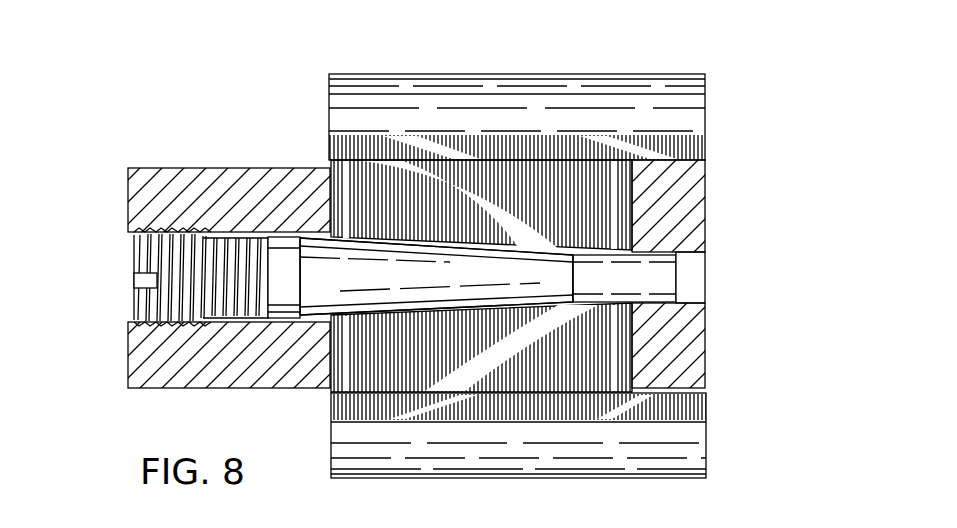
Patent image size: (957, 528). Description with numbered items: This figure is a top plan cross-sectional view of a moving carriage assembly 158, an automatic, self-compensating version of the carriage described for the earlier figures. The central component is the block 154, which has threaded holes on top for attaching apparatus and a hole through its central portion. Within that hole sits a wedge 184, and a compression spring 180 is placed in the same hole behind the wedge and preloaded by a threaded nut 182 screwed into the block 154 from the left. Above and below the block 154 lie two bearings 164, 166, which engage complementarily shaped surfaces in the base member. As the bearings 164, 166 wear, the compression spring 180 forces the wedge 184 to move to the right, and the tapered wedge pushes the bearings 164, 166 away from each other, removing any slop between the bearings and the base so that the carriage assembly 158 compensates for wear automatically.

The block 154 is at (688, 343).
The moving carriage assembly 158 is at (872, 116).
The bearing 164 is at (575, 92).
The bearing 166 is at (404, 453).
The compression spring 180 is at (230, 257).
The threaded nut 182 is at (130, 250).
The wedge 184 is at (322, 257).